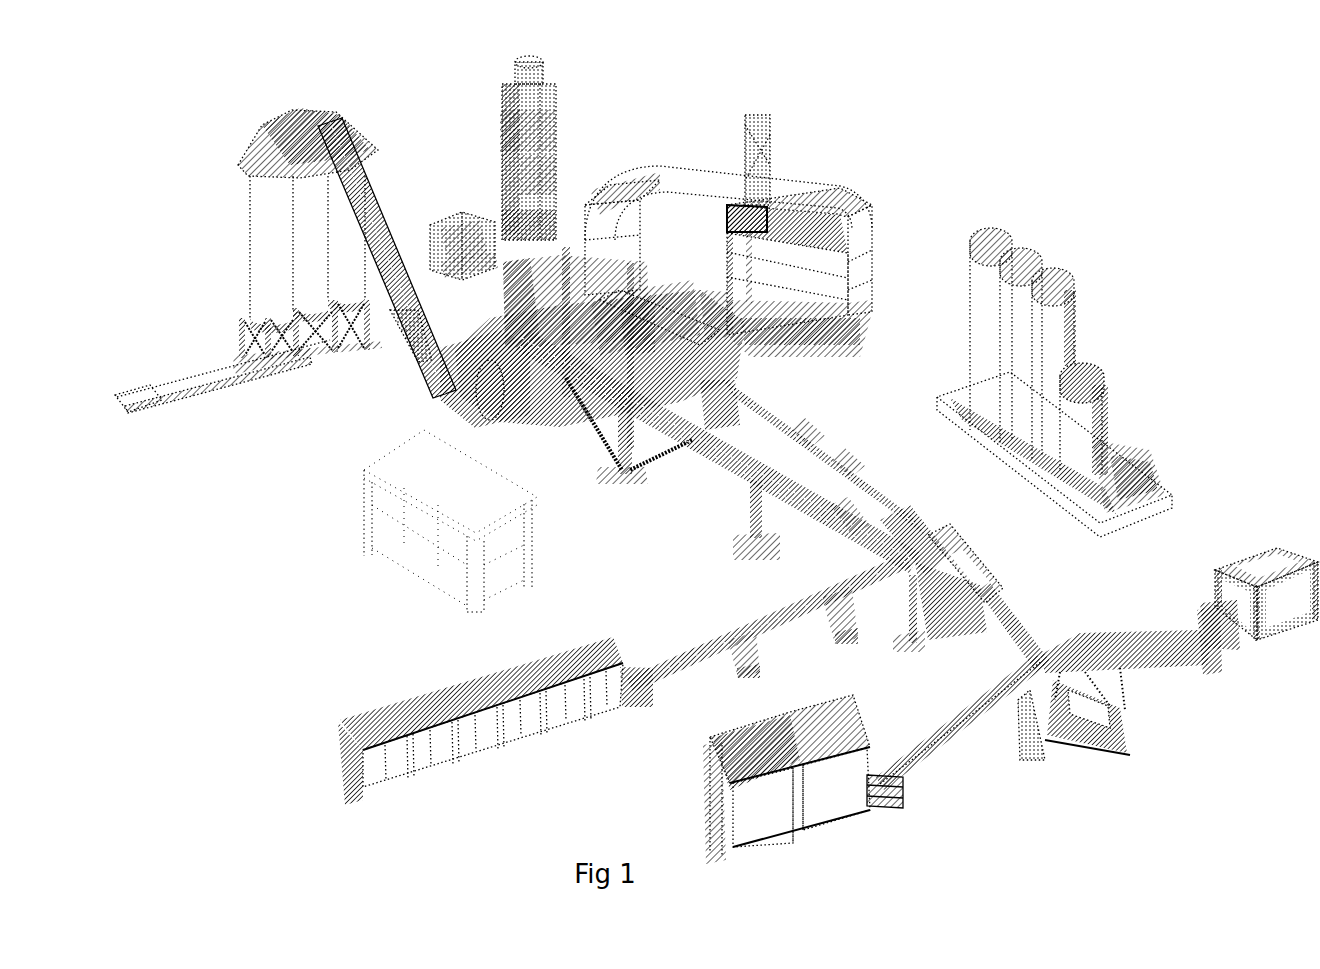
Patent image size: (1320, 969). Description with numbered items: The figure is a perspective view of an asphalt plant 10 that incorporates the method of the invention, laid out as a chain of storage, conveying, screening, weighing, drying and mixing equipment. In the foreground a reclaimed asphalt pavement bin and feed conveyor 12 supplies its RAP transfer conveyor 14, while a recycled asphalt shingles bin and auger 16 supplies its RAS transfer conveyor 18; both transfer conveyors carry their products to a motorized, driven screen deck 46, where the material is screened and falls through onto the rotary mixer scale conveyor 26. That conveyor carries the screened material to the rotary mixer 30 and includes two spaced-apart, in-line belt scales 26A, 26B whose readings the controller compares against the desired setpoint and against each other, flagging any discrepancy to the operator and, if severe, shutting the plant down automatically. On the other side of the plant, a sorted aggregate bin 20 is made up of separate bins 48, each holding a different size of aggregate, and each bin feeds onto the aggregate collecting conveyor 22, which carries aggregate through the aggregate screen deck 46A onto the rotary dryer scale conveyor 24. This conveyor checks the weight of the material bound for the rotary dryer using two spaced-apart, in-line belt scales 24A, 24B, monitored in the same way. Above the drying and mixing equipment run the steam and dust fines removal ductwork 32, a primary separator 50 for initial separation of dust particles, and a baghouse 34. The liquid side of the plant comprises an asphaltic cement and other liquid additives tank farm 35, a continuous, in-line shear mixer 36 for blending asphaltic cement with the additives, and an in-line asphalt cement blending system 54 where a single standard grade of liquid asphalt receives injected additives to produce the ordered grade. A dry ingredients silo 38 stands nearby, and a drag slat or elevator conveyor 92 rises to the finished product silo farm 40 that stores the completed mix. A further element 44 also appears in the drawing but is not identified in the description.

The asphalt plant 10 is at (1017, 115).
The reclaimed asphalt pavement (RAP) bin and feed conveyor 12 is at (825, 800).
The RAP transfer conveyor 14 is at (945, 745).
The recycled asphalt shingles (RAS) bin and auger 16 is at (1258, 558).
The RAS transfer conveyor 18 is at (1122, 636).
The sorted aggregate bin 20 is at (415, 692).
The aggregate collecting conveyor 22 is at (705, 640).
The rotary dryer scale conveyor 24 is at (760, 404).
The belt scale 24A is at (843, 470).
The belt scale 24B is at (803, 440).
The rotary mixer scale conveyor 26 is at (707, 447).
The belt scale 26A is at (905, 538).
The belt scale 26B is at (845, 532).
The rotary mixer 30 is at (483, 387).
The steam and dust fines removal ductwork 32 is at (650, 282).
The baghouse 34 is at (803, 226).
The asphaltic cement and other liquid additives tank farm 35 is at (1088, 335).
The continuous, in-line shear mixer 36 is at (438, 268).
The dry ingredients silo 38 is at (550, 110).
The finished product silo farm 40 is at (366, 176).
The transfer box 44 is at (885, 785).
The screen deck 46 is at (1037, 680).
The screen deck 46A is at (972, 572).
The separate bins 48 is at (388, 762).
The primary separator 50 is at (616, 208).
The in-line asphalt cement blending system 54 is at (440, 215).
The drag slat or elevator conveyor 92 is at (398, 322).